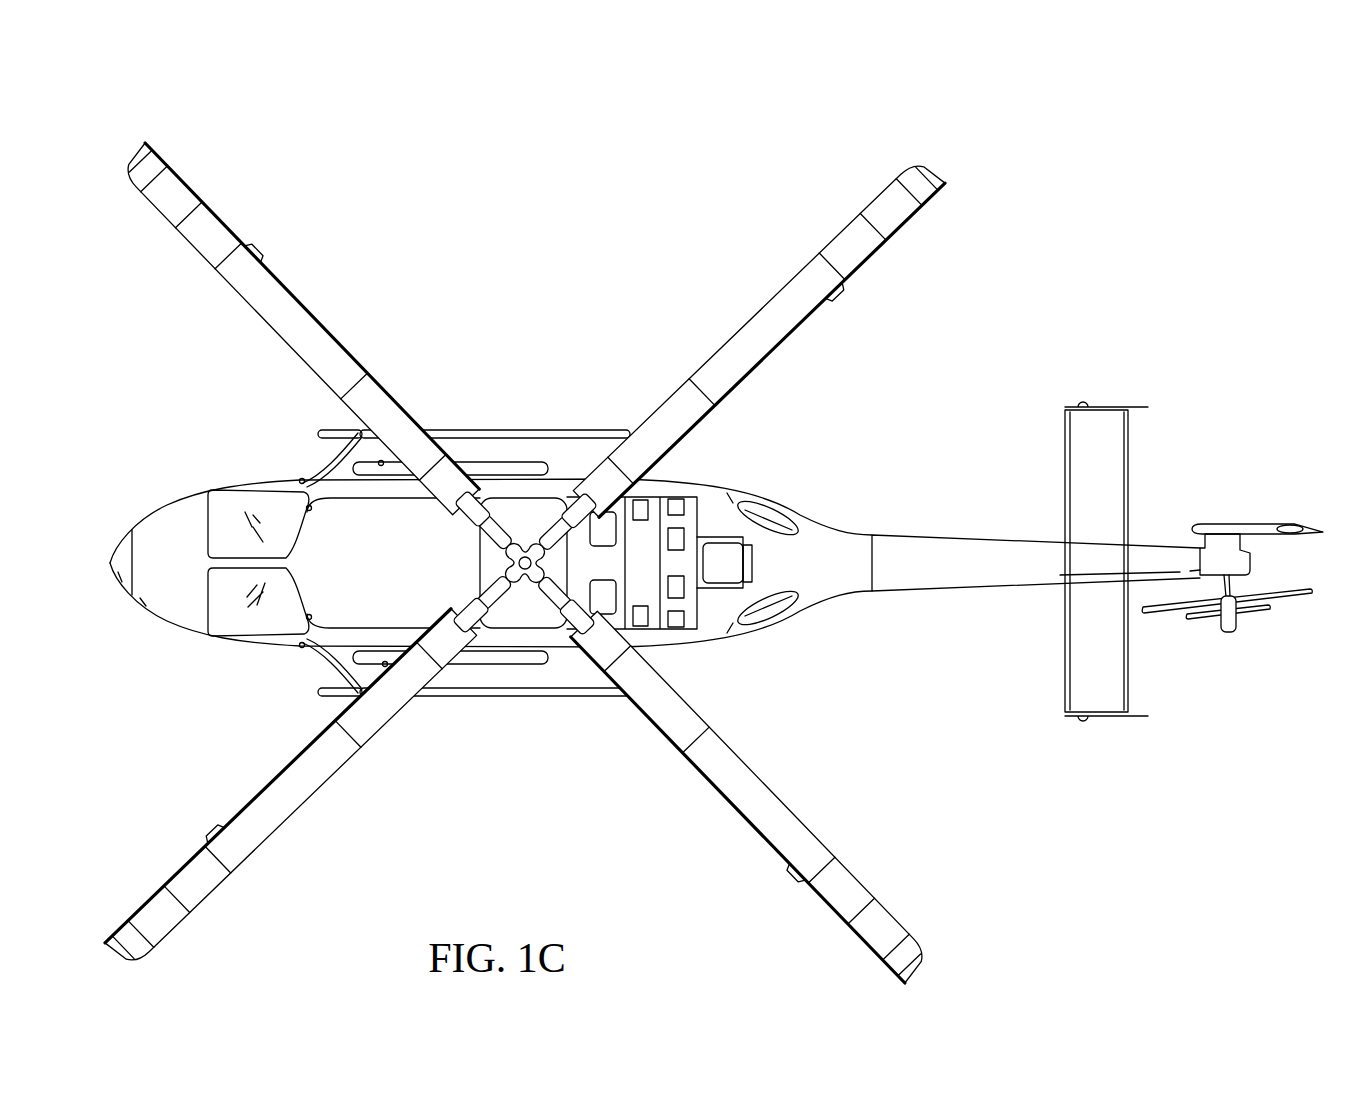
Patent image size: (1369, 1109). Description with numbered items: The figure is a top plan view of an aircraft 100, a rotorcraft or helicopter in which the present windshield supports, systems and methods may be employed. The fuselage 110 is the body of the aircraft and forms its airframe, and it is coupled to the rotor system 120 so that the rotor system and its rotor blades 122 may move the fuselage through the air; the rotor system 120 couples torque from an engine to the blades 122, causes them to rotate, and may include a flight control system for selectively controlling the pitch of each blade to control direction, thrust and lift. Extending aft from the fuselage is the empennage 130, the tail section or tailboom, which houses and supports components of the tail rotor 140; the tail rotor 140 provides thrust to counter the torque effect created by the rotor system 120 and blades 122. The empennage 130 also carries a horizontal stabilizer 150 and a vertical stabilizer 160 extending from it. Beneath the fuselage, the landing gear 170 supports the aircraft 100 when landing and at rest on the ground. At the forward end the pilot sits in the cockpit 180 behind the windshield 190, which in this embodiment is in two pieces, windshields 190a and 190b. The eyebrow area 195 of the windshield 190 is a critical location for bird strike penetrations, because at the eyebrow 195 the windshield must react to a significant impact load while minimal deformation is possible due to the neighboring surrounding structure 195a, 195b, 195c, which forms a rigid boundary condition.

The aircraft 100 is at (699, 528).
The fuselage 110 is at (721, 638).
The rotor system 120 is at (525, 517).
The rotor blades 122 is at (748, 321).
The empennage 130 is at (970, 610).
The tail rotor 140 is at (1239, 644).
The horizontal stabilizer 150 is at (1130, 678).
The vertical stabilizer 160 is at (1228, 522).
The landing gear 170 is at (538, 712).
The cockpit 180 is at (262, 663).
The windshield 190 is at (181, 546).
The windshield 190a is at (224, 526).
The windshield 190b is at (224, 600).
The eyebrow area 195 is at (288, 503).
The surrounding structure 195a is at (300, 480).
The surrounding structure 195b is at (382, 462).
The surrounding structure 195c is at (309, 508).